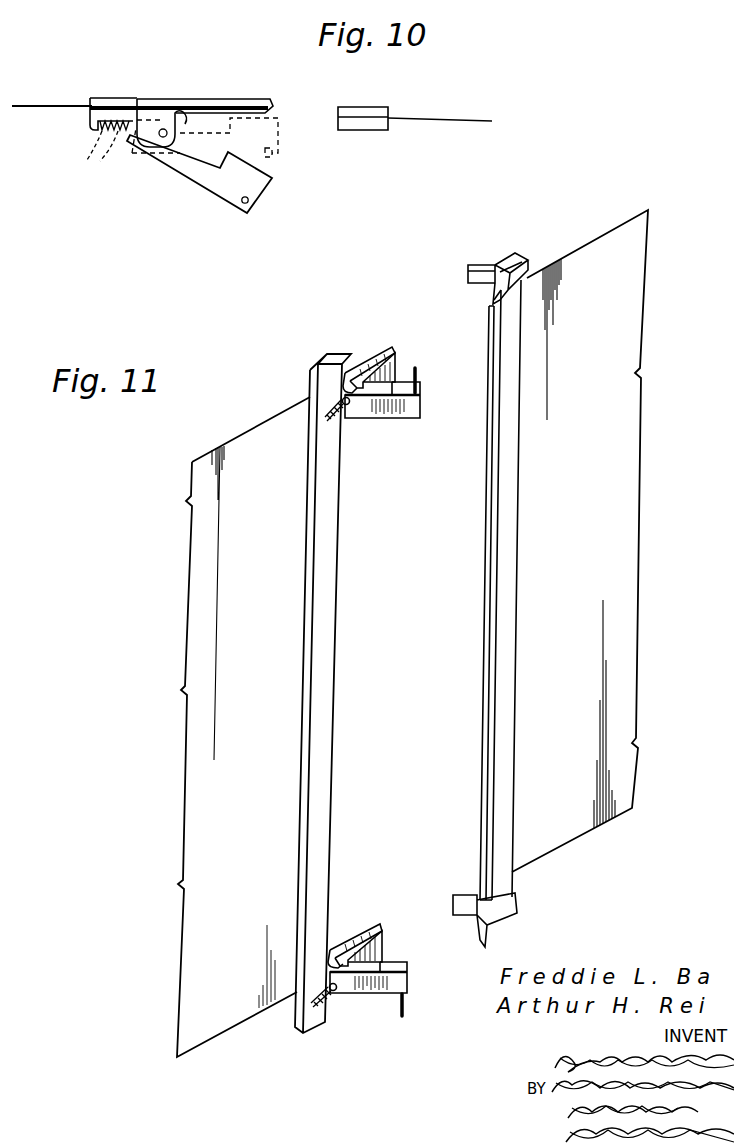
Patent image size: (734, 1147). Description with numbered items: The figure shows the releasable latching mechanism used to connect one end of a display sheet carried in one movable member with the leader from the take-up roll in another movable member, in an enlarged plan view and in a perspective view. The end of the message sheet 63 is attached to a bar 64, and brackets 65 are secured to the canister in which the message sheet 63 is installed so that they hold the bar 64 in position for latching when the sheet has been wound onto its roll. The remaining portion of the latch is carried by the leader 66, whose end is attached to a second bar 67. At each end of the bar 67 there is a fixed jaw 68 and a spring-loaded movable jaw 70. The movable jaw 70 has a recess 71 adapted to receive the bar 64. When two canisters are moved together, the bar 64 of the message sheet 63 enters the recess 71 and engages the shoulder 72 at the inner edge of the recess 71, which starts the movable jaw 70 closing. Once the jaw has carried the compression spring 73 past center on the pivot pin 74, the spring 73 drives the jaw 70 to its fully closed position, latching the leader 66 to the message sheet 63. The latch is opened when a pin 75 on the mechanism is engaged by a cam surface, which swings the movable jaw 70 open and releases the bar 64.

In FIG. 10, the message sheet 63 is at (460, 121).
In FIG. 11, the message sheet 63 is at (590, 614).
In FIG. 10, the bar 64 is at (370, 131).
In FIG. 11, the bar 64 is at (482, 757).
In FIG. 11, the brackets 65 is at (536, 262).
In FIG. 10, the leader 66 is at (37, 104).
In FIG. 11, the leader 66 is at (185, 741).
In FIG. 10, the bar 67 is at (88, 113).
In FIG. 11, the bar 67 is at (332, 722).
In FIG. 10, the fixed jaw 68 is at (242, 99).
In FIG. 11, the fixed jaw 68 is at (380, 350).
In FIG. 10, the movable jaw 70 is at (278, 153).
In FIG. 11, the movable jaw 70 is at (406, 418).
In FIG. 10, the recess 71 is at (197, 143).
In FIG. 11, the recess 71 is at (390, 372).
In FIG. 10, the shoulder 72 is at (192, 112).
In FIG. 11, the shoulder 72 is at (345, 955).
In FIG. 10, the compression spring 73 is at (96, 152).
In FIG. 10, the pivot pin 74 is at (163, 129).
In FIG. 11, the pin 75 is at (420, 376).